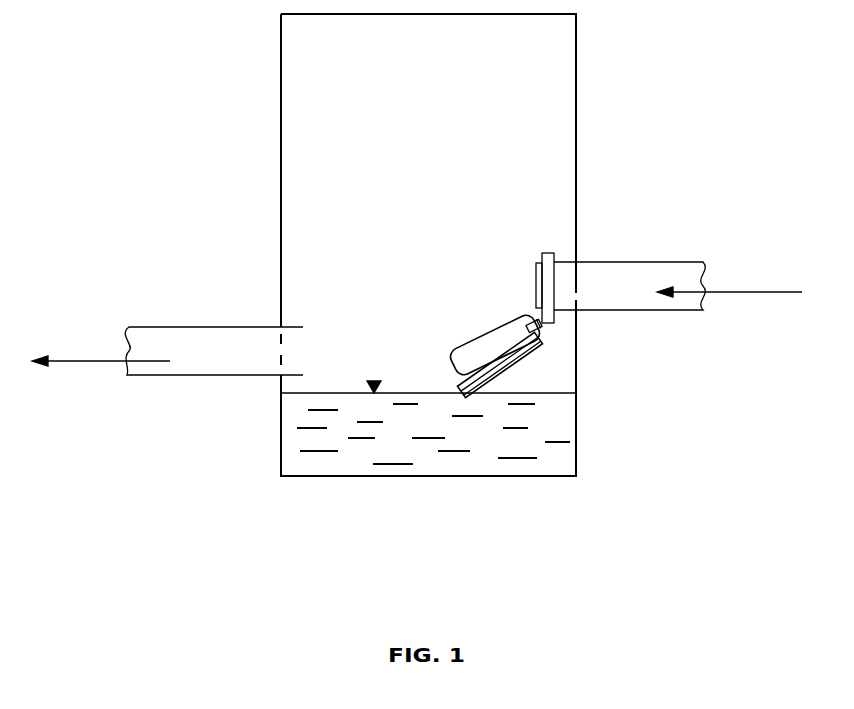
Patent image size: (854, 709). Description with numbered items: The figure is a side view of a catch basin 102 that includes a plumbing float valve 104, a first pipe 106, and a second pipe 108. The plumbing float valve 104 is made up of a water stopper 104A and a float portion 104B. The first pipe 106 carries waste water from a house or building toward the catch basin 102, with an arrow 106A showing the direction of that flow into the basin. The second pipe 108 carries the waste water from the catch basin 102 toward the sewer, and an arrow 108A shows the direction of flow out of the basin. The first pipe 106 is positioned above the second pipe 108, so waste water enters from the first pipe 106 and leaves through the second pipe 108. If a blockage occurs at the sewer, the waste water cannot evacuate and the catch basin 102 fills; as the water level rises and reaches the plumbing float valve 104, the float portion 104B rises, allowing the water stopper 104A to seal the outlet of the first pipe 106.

The catch basin 102 is at (577, 72).
The plumbing float valve 104 is at (458, 272).
The water stopper 104A is at (470, 343).
The float portion 104B is at (520, 362).
The first pipe 106 is at (682, 262).
The arrow 106A is at (729, 283).
The second pipe 108 is at (143, 327).
The arrow 108A is at (101, 351).